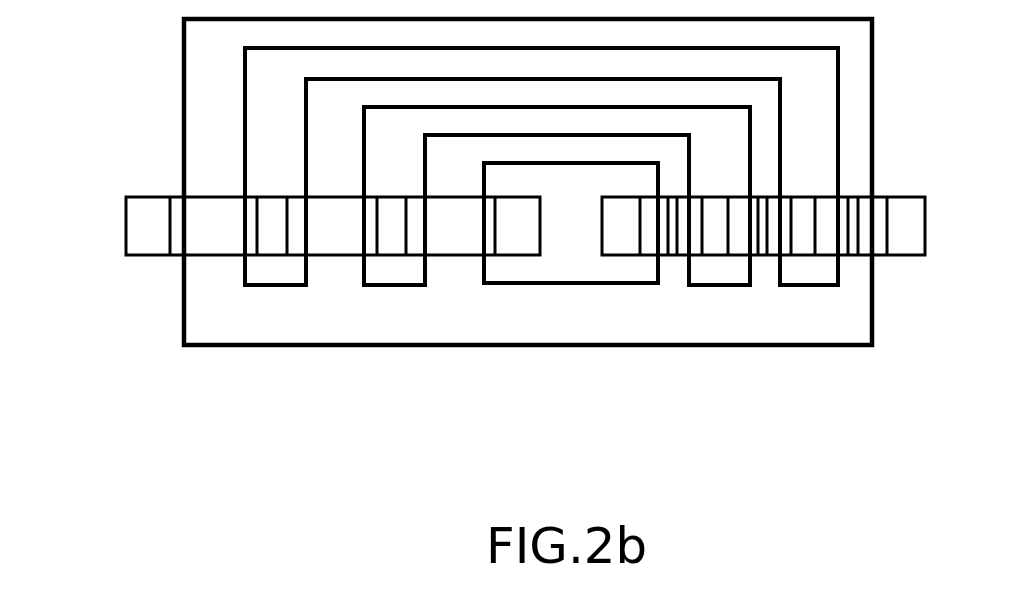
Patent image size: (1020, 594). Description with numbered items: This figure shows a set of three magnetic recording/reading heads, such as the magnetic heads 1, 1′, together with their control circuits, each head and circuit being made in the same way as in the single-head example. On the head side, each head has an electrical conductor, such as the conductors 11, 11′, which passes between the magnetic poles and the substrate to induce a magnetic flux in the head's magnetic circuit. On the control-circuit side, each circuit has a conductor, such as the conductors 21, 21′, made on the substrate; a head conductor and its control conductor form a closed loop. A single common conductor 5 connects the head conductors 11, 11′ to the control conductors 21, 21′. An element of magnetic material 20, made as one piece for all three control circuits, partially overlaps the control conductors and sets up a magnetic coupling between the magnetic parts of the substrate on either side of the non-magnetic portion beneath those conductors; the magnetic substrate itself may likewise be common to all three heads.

The magnetic head 1 is at (683, 276).
The magnetic head 1′ is at (767, 276).
The common conductor 5 is at (358, 332).
The conductor 11 is at (668, 153).
The conductor 11′ is at (757, 140).
The magnetic element 20 is at (143, 224).
The conductor 21 is at (460, 182).
The conductor 21′ is at (335, 165).